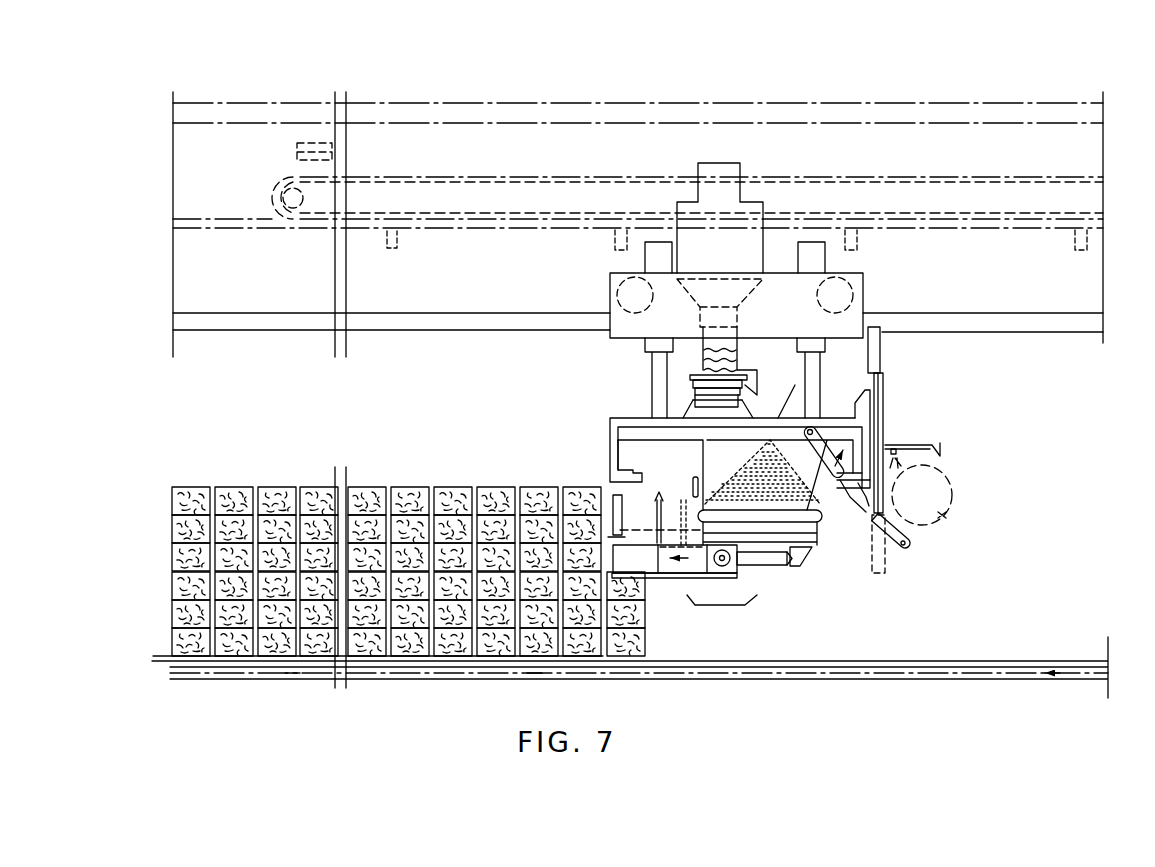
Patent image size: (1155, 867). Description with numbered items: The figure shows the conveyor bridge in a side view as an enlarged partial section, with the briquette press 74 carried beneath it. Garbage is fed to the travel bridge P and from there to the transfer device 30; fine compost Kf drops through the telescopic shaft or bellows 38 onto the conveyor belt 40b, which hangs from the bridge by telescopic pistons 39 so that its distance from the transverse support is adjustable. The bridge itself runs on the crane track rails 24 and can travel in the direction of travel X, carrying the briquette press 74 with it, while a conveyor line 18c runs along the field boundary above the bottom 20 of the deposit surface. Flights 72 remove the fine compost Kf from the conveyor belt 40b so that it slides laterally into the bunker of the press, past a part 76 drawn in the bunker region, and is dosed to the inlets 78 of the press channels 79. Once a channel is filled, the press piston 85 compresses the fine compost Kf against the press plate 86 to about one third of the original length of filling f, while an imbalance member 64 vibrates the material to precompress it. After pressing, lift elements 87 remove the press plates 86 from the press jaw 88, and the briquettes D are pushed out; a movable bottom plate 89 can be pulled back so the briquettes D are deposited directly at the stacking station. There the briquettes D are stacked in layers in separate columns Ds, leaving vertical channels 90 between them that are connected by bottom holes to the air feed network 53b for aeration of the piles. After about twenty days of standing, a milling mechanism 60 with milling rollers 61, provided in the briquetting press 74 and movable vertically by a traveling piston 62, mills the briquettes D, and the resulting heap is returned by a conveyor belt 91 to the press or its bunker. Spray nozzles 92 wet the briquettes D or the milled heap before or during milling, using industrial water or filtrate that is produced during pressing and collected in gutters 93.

The conveyor line 18c is at (385, 178).
The bottom of the deposit surface 20 is at (1008, 655).
The crane track rails 24 is at (978, 322).
The transfer device 30 is at (775, 208).
The bellows 38 is at (737, 346).
The telescopic pistons 39 is at (810, 258).
The conveyor belt for fine compost 40b is at (690, 406).
The air feed network 53b is at (483, 681).
The milling mechanism 60 is at (950, 478).
The milling rollers 61 is at (944, 516).
The traveling piston 62 is at (883, 393).
The imbalance member 64 is at (732, 572).
The flights 72 is at (757, 386).
The briquette press 74 is at (600, 440).
The stop bar 76 is at (696, 486).
The inlets of the press channels 78 is at (682, 522).
The press channels 79 is at (695, 566).
The press piston 85 is at (740, 547).
The press plate 86 is at (632, 552).
The lift elements 87 is at (612, 497).
The press jaw 88 is at (612, 573).
The movable bottom plate 89 is at (648, 577).
The vertical channels 90 is at (296, 487).
The conveyor belt 91 is at (893, 549).
The spray nozzles 92 is at (900, 446).
The gutters 93 is at (757, 601).
The briquettes D is at (495, 500).
The columns Ds is at (386, 581).
The fine compost Kf is at (729, 490).
The travel bridge P is at (545, 295).
The direction of travel X is at (1078, 462).
The original length of filling f is at (620, 580).